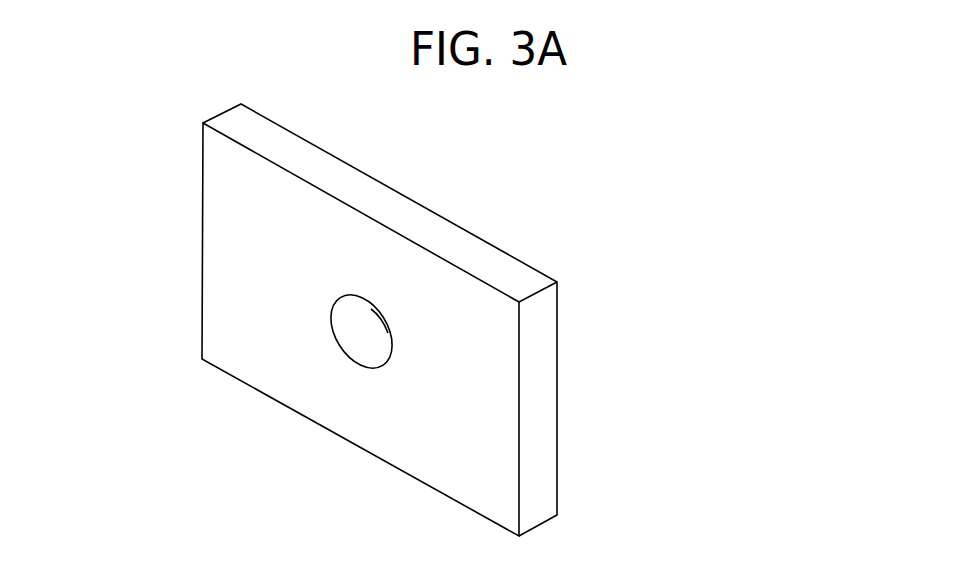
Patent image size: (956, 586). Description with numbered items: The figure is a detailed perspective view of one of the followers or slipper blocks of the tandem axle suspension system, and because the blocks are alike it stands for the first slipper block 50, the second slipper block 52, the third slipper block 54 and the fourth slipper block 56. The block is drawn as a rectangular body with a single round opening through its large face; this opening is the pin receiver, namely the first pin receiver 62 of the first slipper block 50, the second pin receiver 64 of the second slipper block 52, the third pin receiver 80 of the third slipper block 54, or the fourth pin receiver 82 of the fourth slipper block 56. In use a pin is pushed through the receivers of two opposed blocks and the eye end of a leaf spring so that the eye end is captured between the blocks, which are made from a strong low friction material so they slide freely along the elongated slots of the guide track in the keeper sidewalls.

The first slipper block 50 is at (507, 320).
The second slipper block 52 is at (507, 320).
The third slipper block 54 is at (507, 320).
The fourth slipper block 56 is at (543, 368).
The first pin receiver 62 is at (231, 378).
The second pin receiver 64 is at (231, 378).
The third pin receiver 80 is at (231, 378).
The fourth pin receiver 82 is at (350, 345).